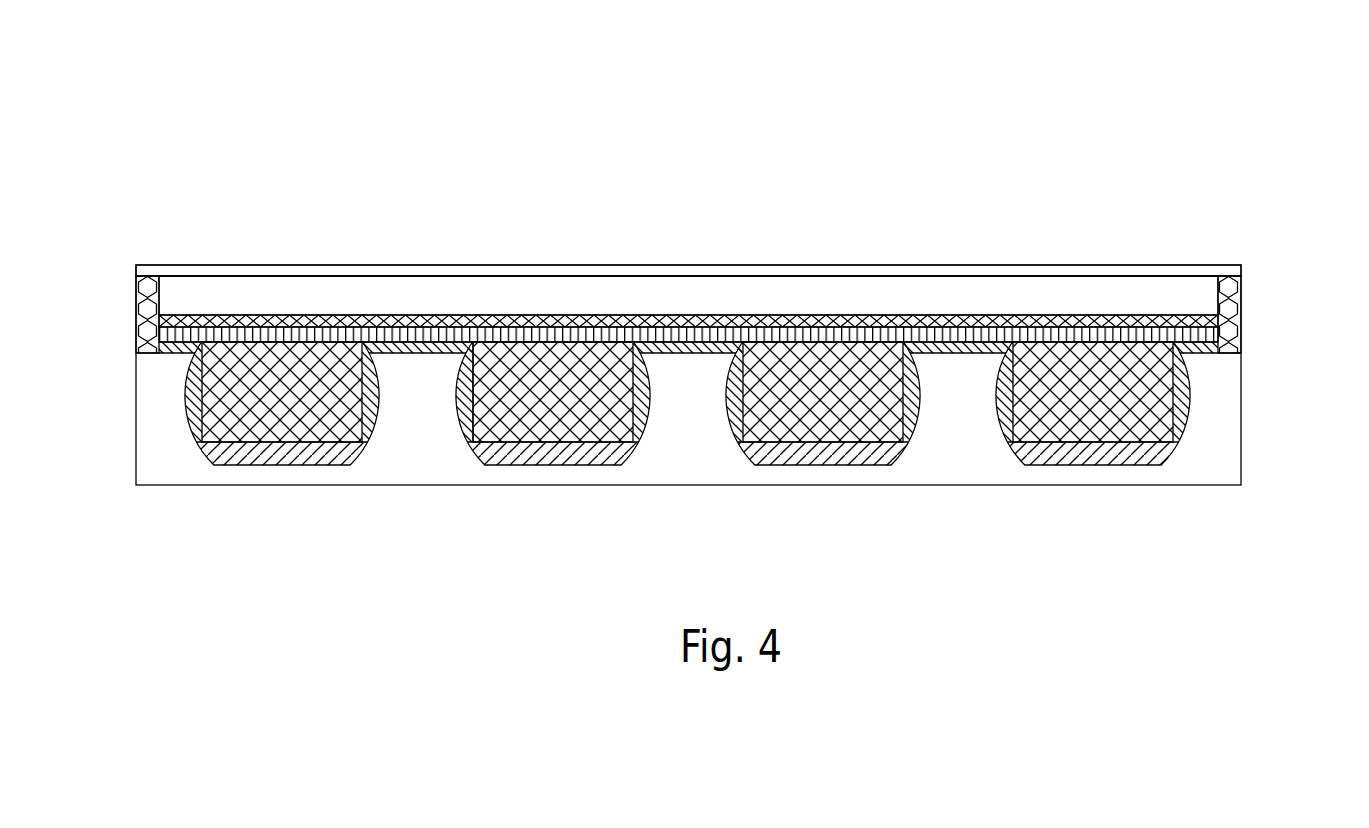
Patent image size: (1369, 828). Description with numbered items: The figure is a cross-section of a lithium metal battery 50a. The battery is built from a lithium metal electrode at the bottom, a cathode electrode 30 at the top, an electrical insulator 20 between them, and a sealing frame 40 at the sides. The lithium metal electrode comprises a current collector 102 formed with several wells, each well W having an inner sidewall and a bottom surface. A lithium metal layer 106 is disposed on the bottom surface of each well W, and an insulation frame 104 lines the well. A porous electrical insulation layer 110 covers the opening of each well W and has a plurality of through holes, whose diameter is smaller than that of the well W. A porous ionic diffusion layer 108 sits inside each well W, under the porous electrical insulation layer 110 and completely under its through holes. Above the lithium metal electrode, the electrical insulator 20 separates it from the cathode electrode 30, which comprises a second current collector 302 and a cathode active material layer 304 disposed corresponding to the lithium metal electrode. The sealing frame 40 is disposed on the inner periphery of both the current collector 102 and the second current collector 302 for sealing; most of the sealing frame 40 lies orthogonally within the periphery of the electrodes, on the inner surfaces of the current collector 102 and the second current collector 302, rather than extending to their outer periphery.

The lithium metal battery 50a is at (268, 219).
The current collector 102 is at (160, 455).
The insulation frame 104 is at (1185, 378).
The lithium metal layer 106 is at (1167, 458).
The ionic diffusion layer 108 is at (228, 392).
The porous electrical insulation layer 110 is at (183, 333).
The electrical insulator 20 is at (1225, 312).
The cathode electrode 30 is at (1116, 96).
The second current collector 302 is at (1075, 272).
The cathode active material layer 304 is at (1152, 293).
The sealing frame 40 is at (1235, 285).
The well W is at (468, 444).